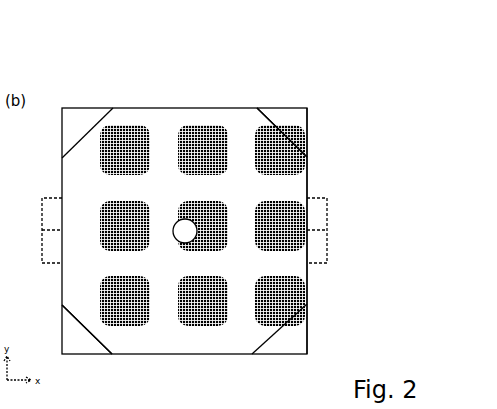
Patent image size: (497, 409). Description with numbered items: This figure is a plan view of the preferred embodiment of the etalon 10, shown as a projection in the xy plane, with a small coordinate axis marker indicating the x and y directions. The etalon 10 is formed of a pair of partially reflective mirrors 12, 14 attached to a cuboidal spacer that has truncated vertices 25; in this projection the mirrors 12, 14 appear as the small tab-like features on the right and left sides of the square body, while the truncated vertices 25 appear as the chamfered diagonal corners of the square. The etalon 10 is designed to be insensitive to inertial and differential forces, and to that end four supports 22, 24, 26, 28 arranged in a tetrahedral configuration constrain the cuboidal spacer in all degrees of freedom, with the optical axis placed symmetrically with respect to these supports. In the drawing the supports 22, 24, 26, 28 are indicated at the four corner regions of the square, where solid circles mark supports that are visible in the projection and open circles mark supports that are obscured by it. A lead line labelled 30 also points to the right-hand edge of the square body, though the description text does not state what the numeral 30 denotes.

The etalon 10 is at (250, 75).
The partially reflective mirror 12 is at (327, 210).
The partially reflective mirror 14 is at (52, 210).
The support 22 is at (78, 338).
The support 24 is at (75, 122).
The truncated vertices 25 is at (280, 117).
The support 26 is at (291, 126).
The support 28 is at (292, 340).
The side edge 30 is at (308, 175).